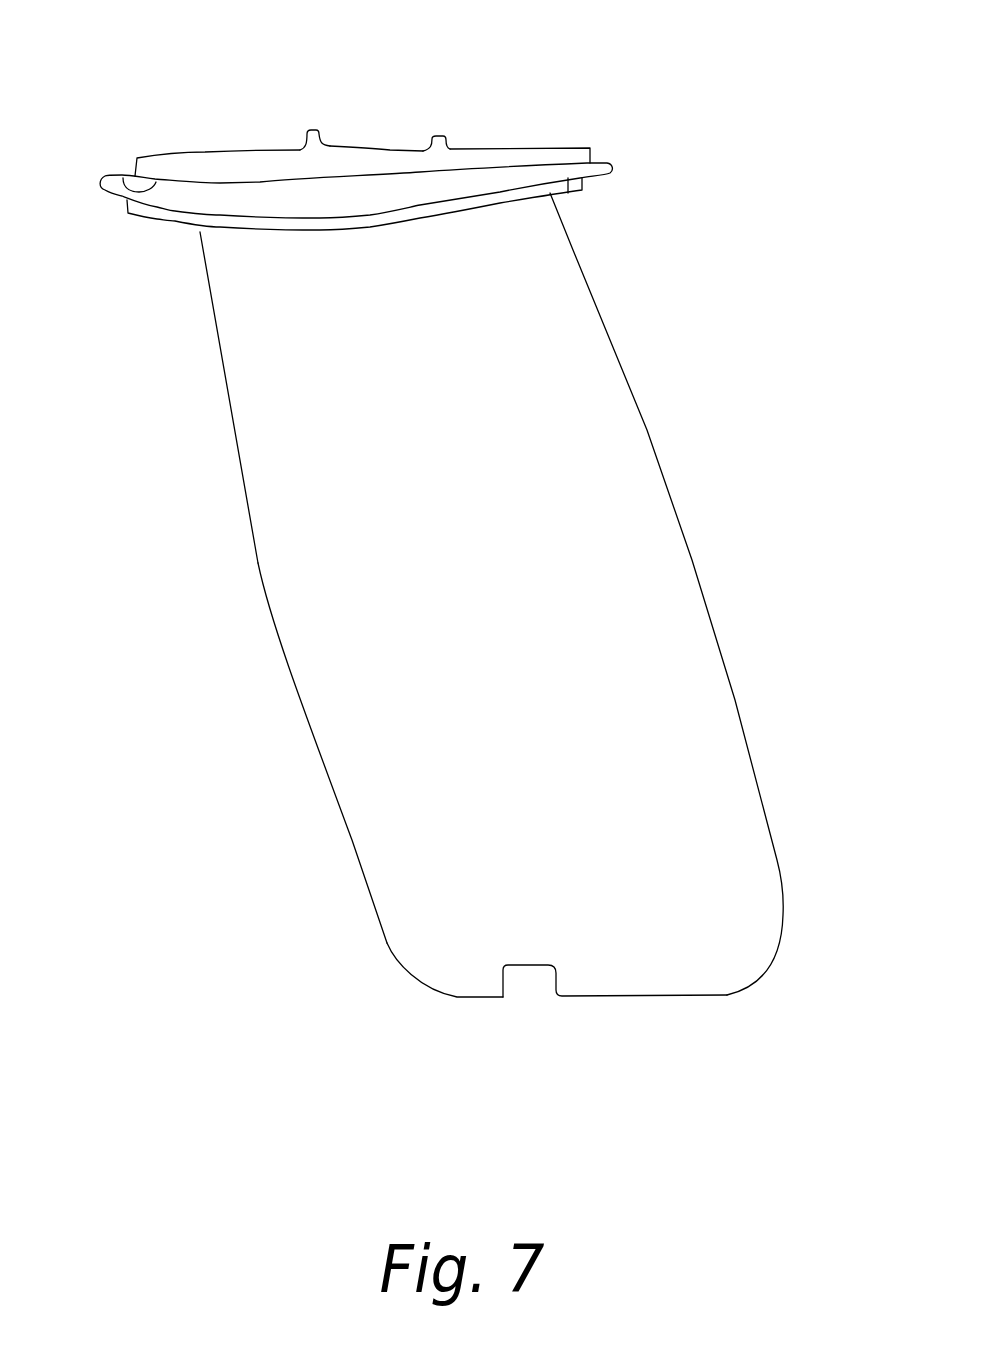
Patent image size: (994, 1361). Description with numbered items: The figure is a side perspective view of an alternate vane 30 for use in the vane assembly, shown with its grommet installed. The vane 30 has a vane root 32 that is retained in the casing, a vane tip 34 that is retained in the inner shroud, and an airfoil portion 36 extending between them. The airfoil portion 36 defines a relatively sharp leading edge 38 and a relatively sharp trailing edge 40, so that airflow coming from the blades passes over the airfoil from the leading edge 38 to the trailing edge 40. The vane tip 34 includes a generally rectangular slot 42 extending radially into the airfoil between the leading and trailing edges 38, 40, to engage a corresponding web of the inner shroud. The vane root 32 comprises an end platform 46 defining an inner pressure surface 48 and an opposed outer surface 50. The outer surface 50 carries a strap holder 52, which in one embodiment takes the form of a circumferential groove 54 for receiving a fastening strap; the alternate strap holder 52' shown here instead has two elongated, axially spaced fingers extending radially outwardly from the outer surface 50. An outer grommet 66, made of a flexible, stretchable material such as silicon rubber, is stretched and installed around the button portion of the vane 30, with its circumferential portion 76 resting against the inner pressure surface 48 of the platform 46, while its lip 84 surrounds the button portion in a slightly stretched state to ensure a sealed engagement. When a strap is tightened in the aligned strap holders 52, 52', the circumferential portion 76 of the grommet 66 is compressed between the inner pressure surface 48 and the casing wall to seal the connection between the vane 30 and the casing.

The vane 30 is at (462, 640).
The vane root 32 is at (362, 88).
The vane tip 34 is at (437, 968).
The airfoil portion 36 is at (313, 642).
The leading edge 38 is at (643, 401).
The trailing edge 40 is at (258, 563).
The slot 42 is at (505, 982).
The end platform 46 is at (547, 158).
The inner pressure surface 48 is at (120, 176).
The outer surface 50 is at (212, 152).
The strap holder 52 is at (376, 148).
The strap holder 52' is at (395, 62).
The circumferential groove 54 is at (311, 130).
The outer grommet 66 is at (587, 180).
The circumferential portion 76 is at (600, 163).
The lip 84 is at (568, 187).